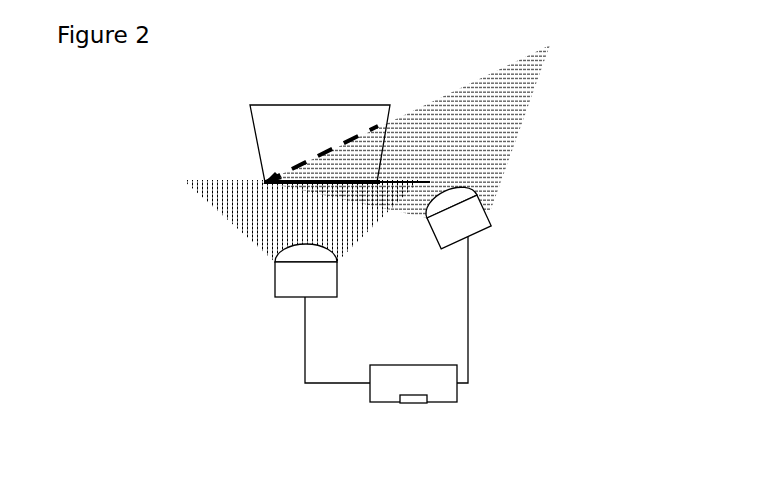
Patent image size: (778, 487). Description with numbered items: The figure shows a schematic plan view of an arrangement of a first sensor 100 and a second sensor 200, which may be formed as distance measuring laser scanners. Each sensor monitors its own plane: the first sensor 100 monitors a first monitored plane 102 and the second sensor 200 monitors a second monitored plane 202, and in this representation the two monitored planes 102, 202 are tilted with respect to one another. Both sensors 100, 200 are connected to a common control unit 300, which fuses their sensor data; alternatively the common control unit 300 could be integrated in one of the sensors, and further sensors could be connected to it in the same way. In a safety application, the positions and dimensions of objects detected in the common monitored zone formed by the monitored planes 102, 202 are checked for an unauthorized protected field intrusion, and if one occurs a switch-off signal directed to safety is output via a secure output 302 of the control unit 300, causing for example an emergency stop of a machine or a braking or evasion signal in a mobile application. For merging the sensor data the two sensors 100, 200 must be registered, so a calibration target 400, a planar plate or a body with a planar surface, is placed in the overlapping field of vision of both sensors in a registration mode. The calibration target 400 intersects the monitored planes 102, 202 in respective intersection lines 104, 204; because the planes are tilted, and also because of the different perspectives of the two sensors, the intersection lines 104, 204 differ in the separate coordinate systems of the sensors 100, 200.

The first sensor 100 is at (289, 313).
The first monitored plane 102 is at (287, 221).
The intersection line 104 is at (309, 162).
The second sensor 200 is at (486, 281).
The second monitored plane 202 is at (421, 131).
The intersection line 204 is at (322, 122).
The common control unit 300 is at (447, 396).
The secure output 302 is at (391, 418).
The calibration target 400 is at (284, 126).